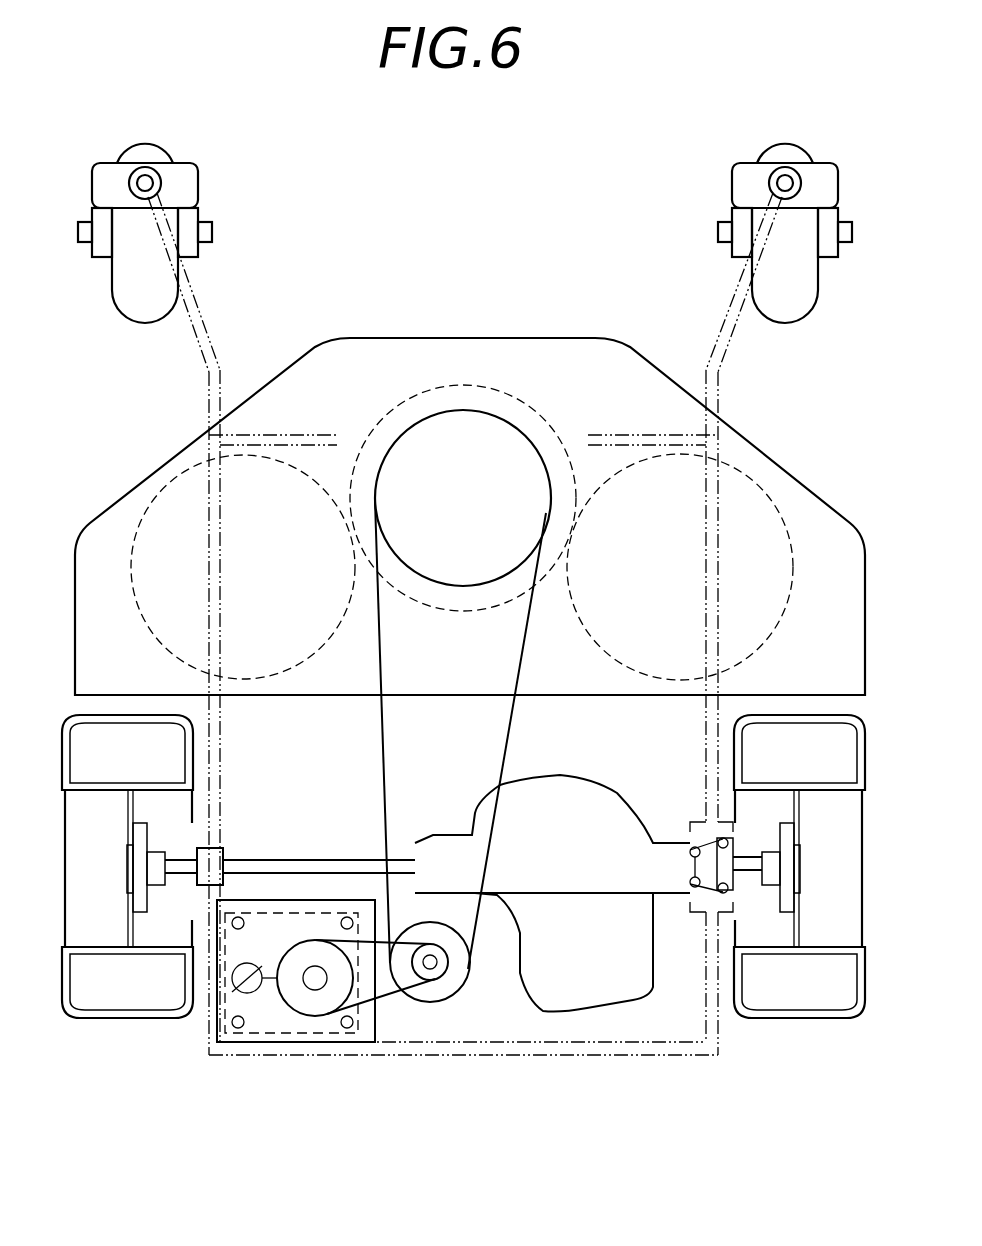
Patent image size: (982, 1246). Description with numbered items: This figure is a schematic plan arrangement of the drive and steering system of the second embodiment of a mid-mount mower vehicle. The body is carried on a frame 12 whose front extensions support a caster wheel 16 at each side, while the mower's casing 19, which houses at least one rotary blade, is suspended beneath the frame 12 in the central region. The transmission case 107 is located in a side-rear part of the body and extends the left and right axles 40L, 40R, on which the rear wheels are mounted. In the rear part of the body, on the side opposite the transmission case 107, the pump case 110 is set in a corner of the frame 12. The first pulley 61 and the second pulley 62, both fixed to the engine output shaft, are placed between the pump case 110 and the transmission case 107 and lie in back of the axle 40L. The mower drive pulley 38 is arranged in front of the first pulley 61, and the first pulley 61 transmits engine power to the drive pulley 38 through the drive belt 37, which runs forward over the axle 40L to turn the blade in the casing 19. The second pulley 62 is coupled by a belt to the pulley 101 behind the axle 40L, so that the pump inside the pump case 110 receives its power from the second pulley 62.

The frame 12 is at (703, 550).
The caster wheel 16 is at (140, 297).
The casing 19 is at (438, 353).
The drive belt 37 is at (383, 780).
The drive pulley 38 is at (458, 480).
The left axle 40L is at (260, 867).
The right axle 40R is at (760, 866).
The first pulley 61 is at (460, 977).
The second pulley 62 is at (427, 1002).
The pulley 101 is at (303, 1002).
The transmission case 107 is at (600, 908).
The pump case 110 is at (255, 1018).